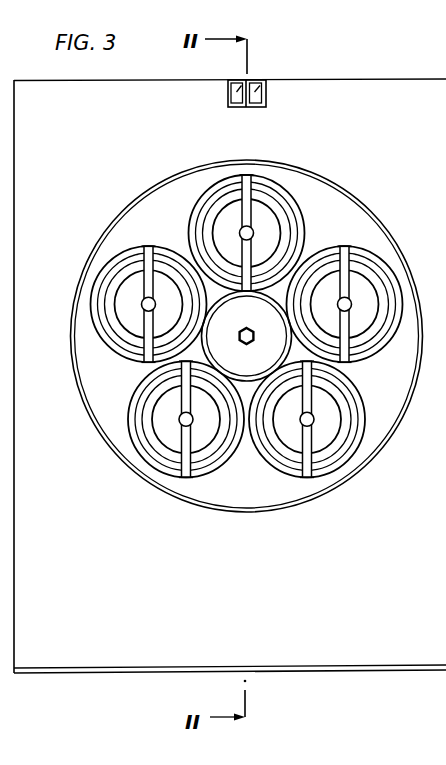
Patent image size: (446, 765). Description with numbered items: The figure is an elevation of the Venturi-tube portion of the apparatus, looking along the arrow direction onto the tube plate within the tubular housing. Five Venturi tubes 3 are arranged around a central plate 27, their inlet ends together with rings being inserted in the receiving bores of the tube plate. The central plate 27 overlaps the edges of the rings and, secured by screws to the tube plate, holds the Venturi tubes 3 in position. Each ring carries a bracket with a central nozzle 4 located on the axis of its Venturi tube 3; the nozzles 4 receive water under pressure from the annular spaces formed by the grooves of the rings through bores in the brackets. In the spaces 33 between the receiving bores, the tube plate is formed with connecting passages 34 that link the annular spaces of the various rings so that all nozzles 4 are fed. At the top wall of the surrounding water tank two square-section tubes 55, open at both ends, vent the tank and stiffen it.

The Venturi tube 3 is at (220, 236).
The central nozzle 4 is at (348, 310).
The central plate 27 is at (237, 367).
The space 33 is at (310, 250).
The connecting passage 34 is at (245, 432).
The square-section tube 55 is at (240, 81).